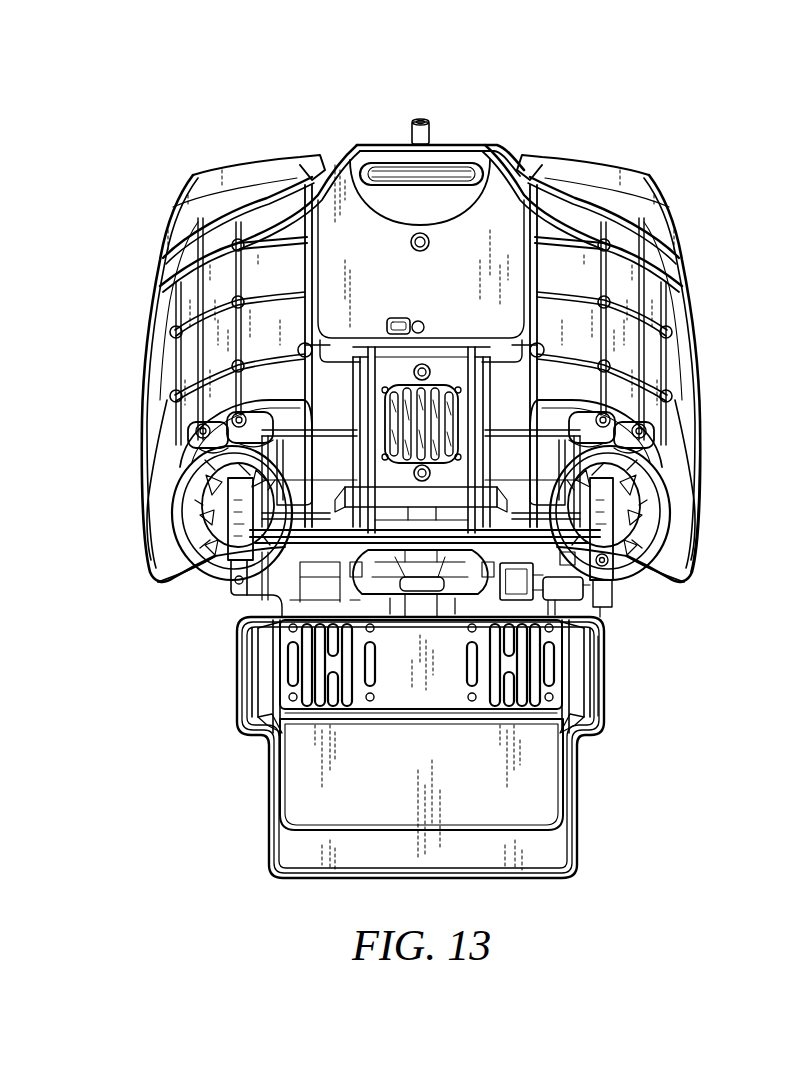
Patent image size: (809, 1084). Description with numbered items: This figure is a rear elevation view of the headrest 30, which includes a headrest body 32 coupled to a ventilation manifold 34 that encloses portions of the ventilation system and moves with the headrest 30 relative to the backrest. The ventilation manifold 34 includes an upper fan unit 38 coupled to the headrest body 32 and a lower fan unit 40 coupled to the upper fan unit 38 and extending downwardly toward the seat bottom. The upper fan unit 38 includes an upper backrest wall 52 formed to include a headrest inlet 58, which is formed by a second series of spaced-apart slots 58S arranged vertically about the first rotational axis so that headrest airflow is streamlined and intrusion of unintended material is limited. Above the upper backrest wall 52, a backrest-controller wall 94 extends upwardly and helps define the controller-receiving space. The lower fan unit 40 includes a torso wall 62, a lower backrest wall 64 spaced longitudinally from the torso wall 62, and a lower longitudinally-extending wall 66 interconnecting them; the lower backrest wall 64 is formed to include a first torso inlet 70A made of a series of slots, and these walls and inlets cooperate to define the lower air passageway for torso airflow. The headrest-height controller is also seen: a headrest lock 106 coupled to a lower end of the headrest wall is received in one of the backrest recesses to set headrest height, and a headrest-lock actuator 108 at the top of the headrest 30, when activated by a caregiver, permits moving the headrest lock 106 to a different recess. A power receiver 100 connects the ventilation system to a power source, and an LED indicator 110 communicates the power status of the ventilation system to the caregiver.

The headrest 30 is at (198, 102).
The headrest body 32 is at (650, 181).
The ventilation manifold 34 is at (137, 575).
The upper fan unit 38 is at (704, 407).
The lower fan unit 40 is at (233, 733).
The upper backrest wall 52 is at (440, 373).
The headrest inlet 58 is at (398, 430).
The second series of spaced-apart slots 58S is at (421, 424).
The torso wall 62 is at (267, 837).
The lower backrest wall 64 is at (550, 737).
The lower longitudinally-extending wall 66 is at (573, 690).
The first torso inlet 70A is at (703, 679).
The backrest-controller wall 94 is at (503, 223).
The power receiver 100 is at (627, 580).
The headrest lock 106 is at (259, 539).
The headrest-lock actuator 108 is at (357, 143).
The LED indicator 110 is at (422, 118).